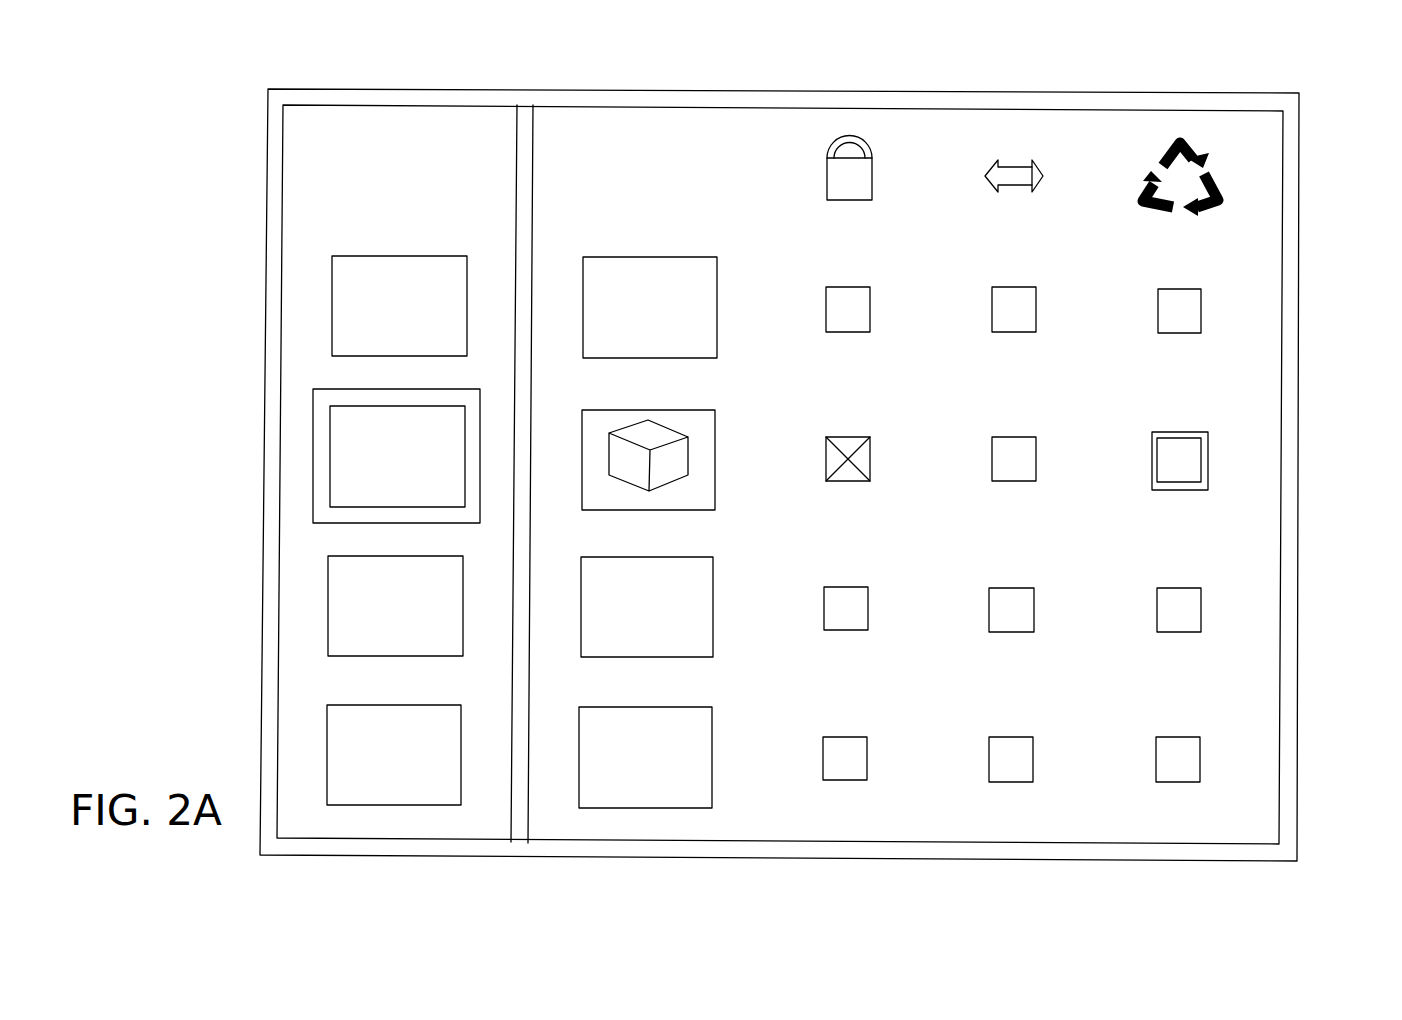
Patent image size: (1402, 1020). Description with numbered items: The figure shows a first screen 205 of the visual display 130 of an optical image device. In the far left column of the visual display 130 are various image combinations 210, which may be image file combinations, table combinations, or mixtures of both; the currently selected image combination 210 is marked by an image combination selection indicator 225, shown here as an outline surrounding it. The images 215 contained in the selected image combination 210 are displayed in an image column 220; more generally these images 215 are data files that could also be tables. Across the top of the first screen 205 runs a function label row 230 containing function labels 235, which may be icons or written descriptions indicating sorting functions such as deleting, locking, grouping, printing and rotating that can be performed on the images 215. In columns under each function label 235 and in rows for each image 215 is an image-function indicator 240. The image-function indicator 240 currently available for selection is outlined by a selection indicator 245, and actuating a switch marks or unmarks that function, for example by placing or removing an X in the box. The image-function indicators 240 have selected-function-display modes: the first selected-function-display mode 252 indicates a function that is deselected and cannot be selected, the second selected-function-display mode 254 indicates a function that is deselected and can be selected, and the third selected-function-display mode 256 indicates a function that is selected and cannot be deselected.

The visual display 130 is at (508, 857).
The first screen 205 is at (843, 842).
The image combinations 210 is at (344, 511).
The images 215 is at (717, 303).
The image column 220 is at (645, 147).
The image combination selection indicator 225 is at (313, 472).
The function label row 230 is at (1325, 185).
The function labels 235 is at (1050, 128).
The image-function indicator 240 is at (1051, 514).
The selection indicator 245 is at (1208, 457).
The first selected-function-display mode 252 is at (1010, 503).
The second selected-function-display mode 254 is at (1170, 510).
The third selected-function-display mode 256 is at (838, 503).